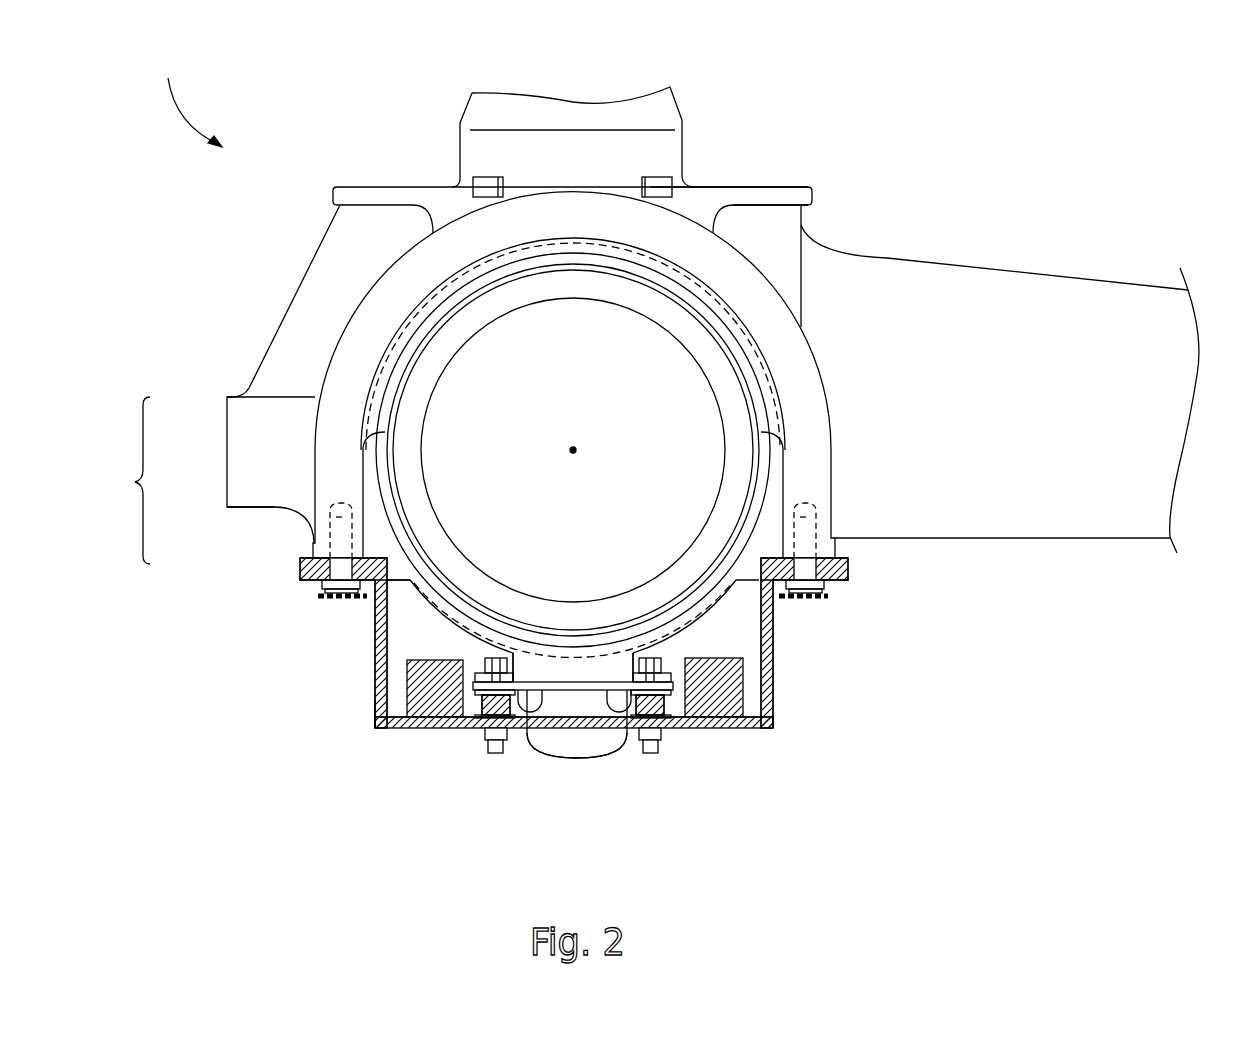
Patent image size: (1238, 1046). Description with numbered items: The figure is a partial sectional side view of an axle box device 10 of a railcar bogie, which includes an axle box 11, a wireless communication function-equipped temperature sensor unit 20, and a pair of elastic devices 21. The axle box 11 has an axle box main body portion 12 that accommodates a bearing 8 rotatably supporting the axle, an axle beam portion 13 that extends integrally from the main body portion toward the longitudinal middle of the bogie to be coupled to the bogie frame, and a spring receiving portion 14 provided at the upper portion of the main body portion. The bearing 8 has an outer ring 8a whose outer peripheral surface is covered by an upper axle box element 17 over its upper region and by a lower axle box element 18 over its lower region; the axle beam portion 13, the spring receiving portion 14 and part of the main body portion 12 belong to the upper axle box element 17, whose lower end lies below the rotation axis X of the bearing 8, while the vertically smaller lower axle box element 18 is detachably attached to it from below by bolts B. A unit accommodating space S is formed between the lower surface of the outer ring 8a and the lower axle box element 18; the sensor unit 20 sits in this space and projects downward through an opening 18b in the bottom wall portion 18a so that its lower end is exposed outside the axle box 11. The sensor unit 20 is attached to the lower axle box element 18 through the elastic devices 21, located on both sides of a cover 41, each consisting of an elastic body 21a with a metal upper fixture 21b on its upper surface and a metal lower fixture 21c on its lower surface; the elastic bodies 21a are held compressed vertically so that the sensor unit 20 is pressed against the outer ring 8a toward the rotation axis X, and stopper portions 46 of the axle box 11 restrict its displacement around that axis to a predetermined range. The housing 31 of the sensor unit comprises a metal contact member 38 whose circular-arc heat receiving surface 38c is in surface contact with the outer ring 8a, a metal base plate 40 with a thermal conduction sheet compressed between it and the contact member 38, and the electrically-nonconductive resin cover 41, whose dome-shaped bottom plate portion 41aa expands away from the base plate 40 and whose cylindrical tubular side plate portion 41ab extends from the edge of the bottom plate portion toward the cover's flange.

The bearing 8 is at (768, 483).
The outer ring 8a is at (738, 588).
The axle box device 10 is at (187, 93).
The axle box 11 is at (367, 187).
The axle box main body portion 12 is at (125, 480).
The axle beam portion 13 is at (1135, 296).
The spring receiving portion 14 is at (780, 185).
The upper axle box element 17 is at (228, 412).
The lower axle box element 18 is at (298, 572).
The bottom wall portion 18a is at (400, 735).
The opening 18b is at (518, 735).
The wireless communication function-equipped temperature sensor unit 20 is at (583, 758).
The elastic device 21 is at (438, 730).
The elastic body 21a is at (462, 730).
The upper fixture 21b is at (770, 728).
The lower fixture 21c is at (685, 728).
The housing 31 is at (610, 752).
The contact member 38 is at (600, 655).
The heat receiving surface 38c is at (588, 668).
The base plate 40 is at (530, 682).
The cover 41 is at (540, 750).
The bottom plate portion 41aa is at (521, 760).
The tubular side plate portion 41ab is at (627, 735).
The stopper portion 46 is at (467, 707).
The bolt B is at (322, 598).
The unit accommodating space S is at (412, 642).
The rotation axis X is at (574, 449).